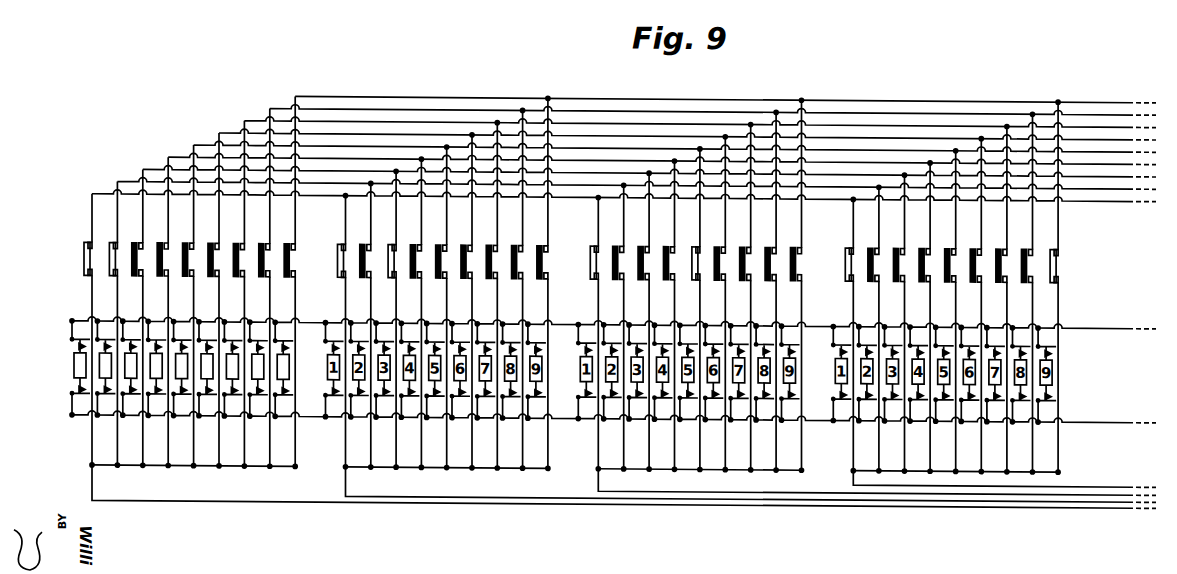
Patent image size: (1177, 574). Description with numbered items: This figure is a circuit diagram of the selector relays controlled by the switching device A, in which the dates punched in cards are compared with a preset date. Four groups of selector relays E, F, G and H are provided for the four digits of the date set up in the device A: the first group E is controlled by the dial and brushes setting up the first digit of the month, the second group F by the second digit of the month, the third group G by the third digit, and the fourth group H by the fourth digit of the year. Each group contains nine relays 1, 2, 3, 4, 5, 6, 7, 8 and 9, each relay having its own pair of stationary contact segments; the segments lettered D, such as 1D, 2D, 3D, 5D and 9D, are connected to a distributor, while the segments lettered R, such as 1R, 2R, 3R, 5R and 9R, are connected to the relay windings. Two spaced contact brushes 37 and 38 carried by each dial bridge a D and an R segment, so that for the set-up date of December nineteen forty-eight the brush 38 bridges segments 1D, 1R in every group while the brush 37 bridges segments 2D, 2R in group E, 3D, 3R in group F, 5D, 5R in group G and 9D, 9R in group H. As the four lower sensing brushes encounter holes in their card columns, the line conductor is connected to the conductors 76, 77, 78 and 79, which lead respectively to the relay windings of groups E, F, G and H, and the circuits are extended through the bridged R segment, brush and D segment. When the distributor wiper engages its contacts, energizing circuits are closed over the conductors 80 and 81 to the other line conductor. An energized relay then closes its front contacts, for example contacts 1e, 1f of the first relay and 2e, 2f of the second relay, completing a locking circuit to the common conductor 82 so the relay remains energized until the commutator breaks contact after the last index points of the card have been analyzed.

The contact brush 37 is at (561, 255).
The contact brush 38 is at (457, 263).
The common conductor 82 is at (84, 321).
The conductor 76 is at (921, 502).
The conductor 77 is at (968, 496).
The conductor 78 is at (1010, 489).
The conductor 79 is at (1045, 481).
The conductor 80 is at (1081, 195).
The conductor 81 is at (1121, 183).
The switching device A is at (82, 243).
The first group of selector relays E is at (63, 370).
The second group of selector relays F is at (317, 372).
The third group of selector relays G is at (571, 374).
The fourth group of selector relays H is at (826, 376).
The contact segment 1D is at (480, 263).
The contact segment 2D is at (125, 261).
The contact segment 3D is at (403, 264).
The contact segment 5D is at (707, 266).
The contact segment 9D is at (1067, 272).
The contact segment 1R is at (91, 277).
The contact segment 2R is at (116, 277).
The contact segment 3R is at (395, 277).
The contact segment 5R is at (699, 277).
The contact segment 9R is at (1058, 277).
The front contact 1f is at (83, 350).
The front contact 2f is at (108, 348).
The front contact 1e is at (84, 389).
The front contact 2e is at (104, 389).
The relay 1 is at (82, 393).
The relay 2 is at (107, 393).
The relay 3 is at (133, 393).
The relay 4 is at (158, 393).
The relay 5 is at (184, 394).
The relay 6 is at (209, 394).
The relay 7 is at (234, 394).
The relay 8 is at (260, 394).
The relay 9 is at (285, 394).